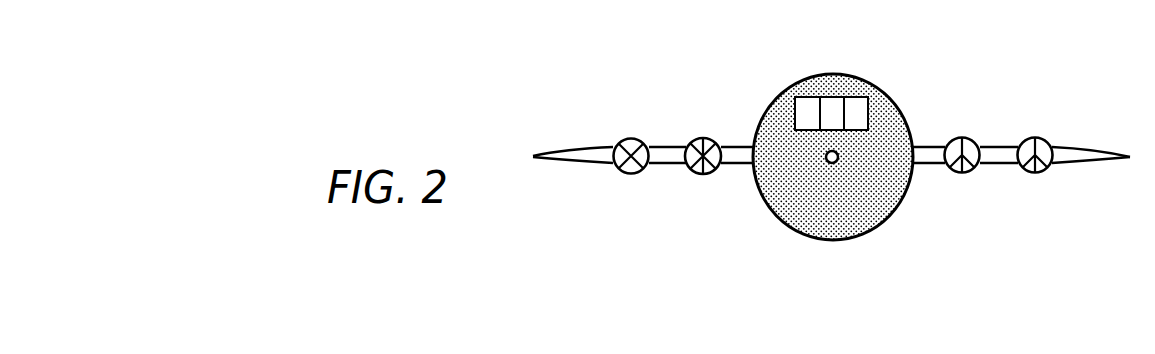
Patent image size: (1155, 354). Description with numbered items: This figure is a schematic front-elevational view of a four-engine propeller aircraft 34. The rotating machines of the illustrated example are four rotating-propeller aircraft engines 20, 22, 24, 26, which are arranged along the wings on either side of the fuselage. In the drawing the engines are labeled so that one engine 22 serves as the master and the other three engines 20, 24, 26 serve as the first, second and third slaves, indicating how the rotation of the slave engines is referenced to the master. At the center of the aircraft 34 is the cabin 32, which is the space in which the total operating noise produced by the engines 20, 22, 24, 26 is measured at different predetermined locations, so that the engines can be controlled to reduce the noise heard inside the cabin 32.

The rotating-propeller aircraft engine 20 is at (623, 172).
The rotating-propeller aircraft engine 22 is at (695, 172).
The rotating-propeller aircraft engine 24 is at (960, 170).
The rotating-propeller aircraft engine 26 is at (1045, 170).
The cabin 32 is at (766, 203).
The aircraft 34 is at (886, 58).